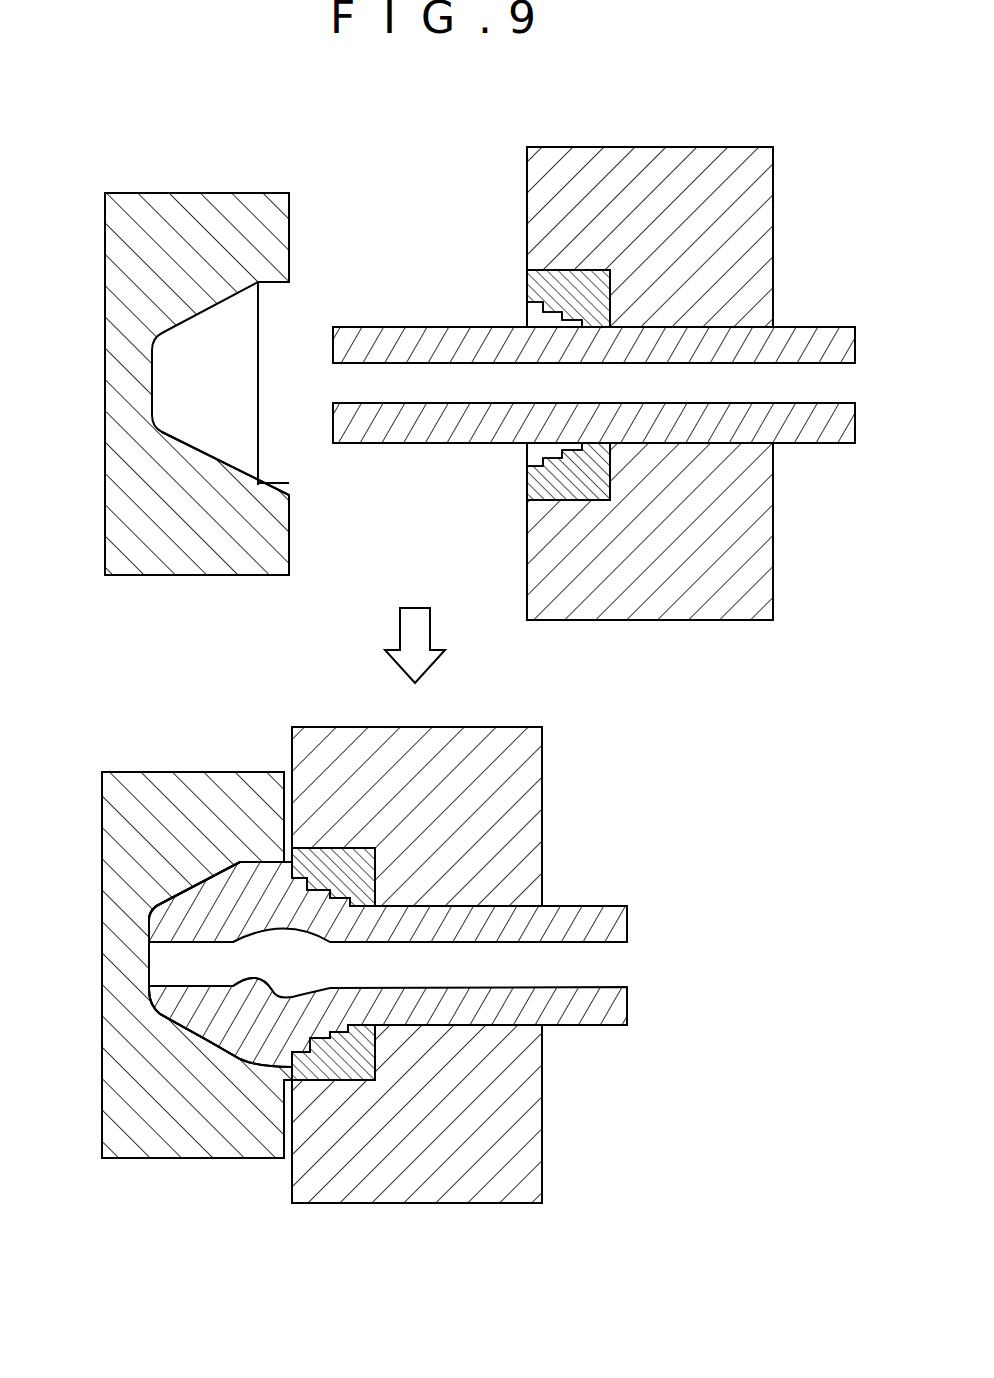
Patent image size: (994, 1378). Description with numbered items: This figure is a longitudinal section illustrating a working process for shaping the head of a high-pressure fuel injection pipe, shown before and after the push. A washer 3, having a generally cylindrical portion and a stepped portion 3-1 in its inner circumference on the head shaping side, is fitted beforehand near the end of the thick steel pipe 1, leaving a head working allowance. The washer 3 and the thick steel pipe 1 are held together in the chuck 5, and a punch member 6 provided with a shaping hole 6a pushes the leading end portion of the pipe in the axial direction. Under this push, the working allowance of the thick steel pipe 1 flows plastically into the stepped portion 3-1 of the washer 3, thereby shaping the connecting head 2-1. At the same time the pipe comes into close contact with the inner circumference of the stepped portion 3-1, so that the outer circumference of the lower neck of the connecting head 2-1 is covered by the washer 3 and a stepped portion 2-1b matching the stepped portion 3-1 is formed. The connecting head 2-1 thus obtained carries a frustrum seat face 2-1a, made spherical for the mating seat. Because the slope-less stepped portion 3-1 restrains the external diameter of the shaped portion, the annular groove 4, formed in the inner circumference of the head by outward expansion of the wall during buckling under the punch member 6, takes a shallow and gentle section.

The thick steel pipe 1 is at (360, 338).
The connecting head 2-1 is at (240, 872).
The seat face 2-1a is at (240, 995).
The stepped portion 2-1b is at (327, 1030).
The washer 3 is at (576, 283).
The stepped portion 3-1 is at (522, 312).
The annular groove 4 is at (245, 990).
The chuck 5 is at (720, 203).
The punch member 6 is at (157, 226).
The shaping hole 6a is at (220, 466).